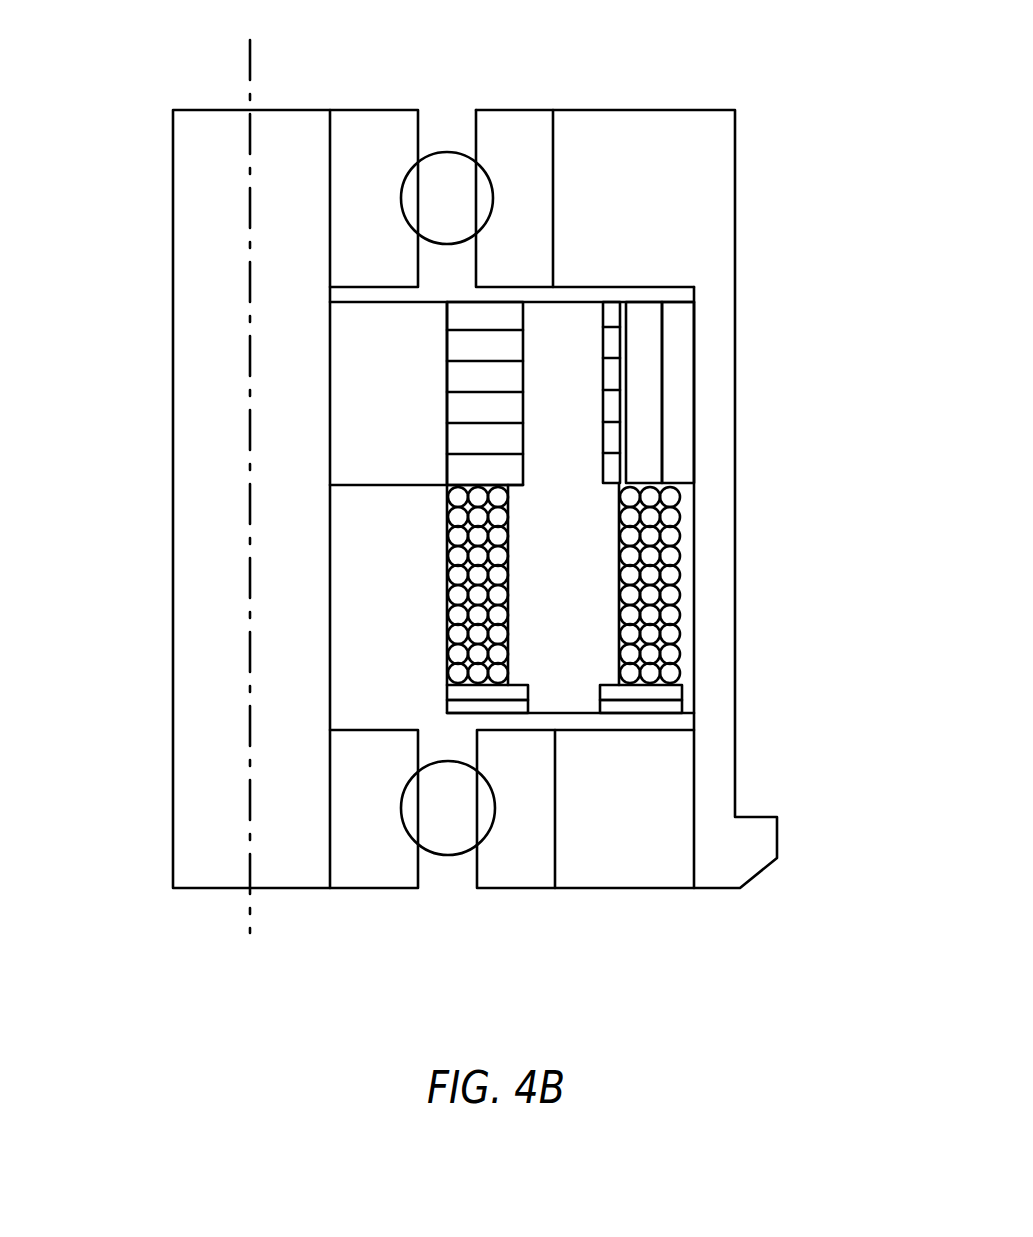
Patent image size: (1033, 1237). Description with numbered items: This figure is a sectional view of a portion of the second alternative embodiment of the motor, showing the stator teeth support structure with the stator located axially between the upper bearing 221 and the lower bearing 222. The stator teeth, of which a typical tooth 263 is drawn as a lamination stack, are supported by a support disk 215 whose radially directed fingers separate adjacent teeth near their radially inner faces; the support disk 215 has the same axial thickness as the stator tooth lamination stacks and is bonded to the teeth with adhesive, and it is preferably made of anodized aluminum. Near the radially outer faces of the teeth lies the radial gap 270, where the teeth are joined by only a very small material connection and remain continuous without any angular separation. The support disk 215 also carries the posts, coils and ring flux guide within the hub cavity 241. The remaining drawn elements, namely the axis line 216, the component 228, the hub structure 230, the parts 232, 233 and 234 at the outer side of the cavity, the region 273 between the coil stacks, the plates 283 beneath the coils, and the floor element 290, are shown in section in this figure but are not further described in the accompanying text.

The support disk 215 is at (372, 323).
The axis of rotation 216 is at (248, 77).
The upper bearing 221 is at (450, 170).
The lower bearing 222 is at (448, 837).
The base 228 is at (192, 372).
The hub 230 is at (720, 170).
The magnet 232 is at (677, 378).
The hub wall 233 is at (720, 470).
The back iron ring 234 is at (648, 320).
The hub cavity 241 is at (688, 531).
The stator tooth 263 is at (500, 333).
The gap 270 is at (619, 305).
The coil cavity 273 is at (583, 592).
The insulator plates 283 is at (676, 658).
The base plate 290 is at (668, 707).